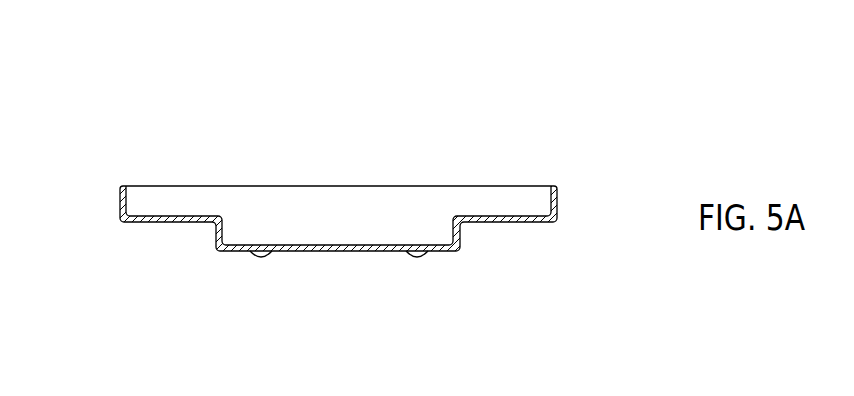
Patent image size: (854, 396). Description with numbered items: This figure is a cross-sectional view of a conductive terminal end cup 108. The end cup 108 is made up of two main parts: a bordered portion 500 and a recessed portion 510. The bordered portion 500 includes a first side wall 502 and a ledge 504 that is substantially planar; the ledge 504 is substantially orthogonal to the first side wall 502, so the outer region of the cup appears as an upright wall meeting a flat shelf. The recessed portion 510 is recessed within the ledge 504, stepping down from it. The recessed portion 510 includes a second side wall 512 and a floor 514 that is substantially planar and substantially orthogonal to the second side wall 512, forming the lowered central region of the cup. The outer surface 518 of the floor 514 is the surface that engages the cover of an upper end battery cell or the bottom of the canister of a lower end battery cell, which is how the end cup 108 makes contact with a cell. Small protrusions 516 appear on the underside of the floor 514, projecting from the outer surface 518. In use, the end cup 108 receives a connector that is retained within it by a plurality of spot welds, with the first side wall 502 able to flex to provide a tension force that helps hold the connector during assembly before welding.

The conductive terminal end cup 108 is at (295, 102).
The bordered portion 500 is at (105, 201).
The first side wall 502 is at (560, 200).
The ledge 504 is at (138, 221).
The recessed portion 510 is at (479, 243).
The second side wall 512 is at (205, 238).
The floor 514 is at (385, 253).
The protrusions 516 is at (263, 257).
The outer surface 518 is at (326, 268).